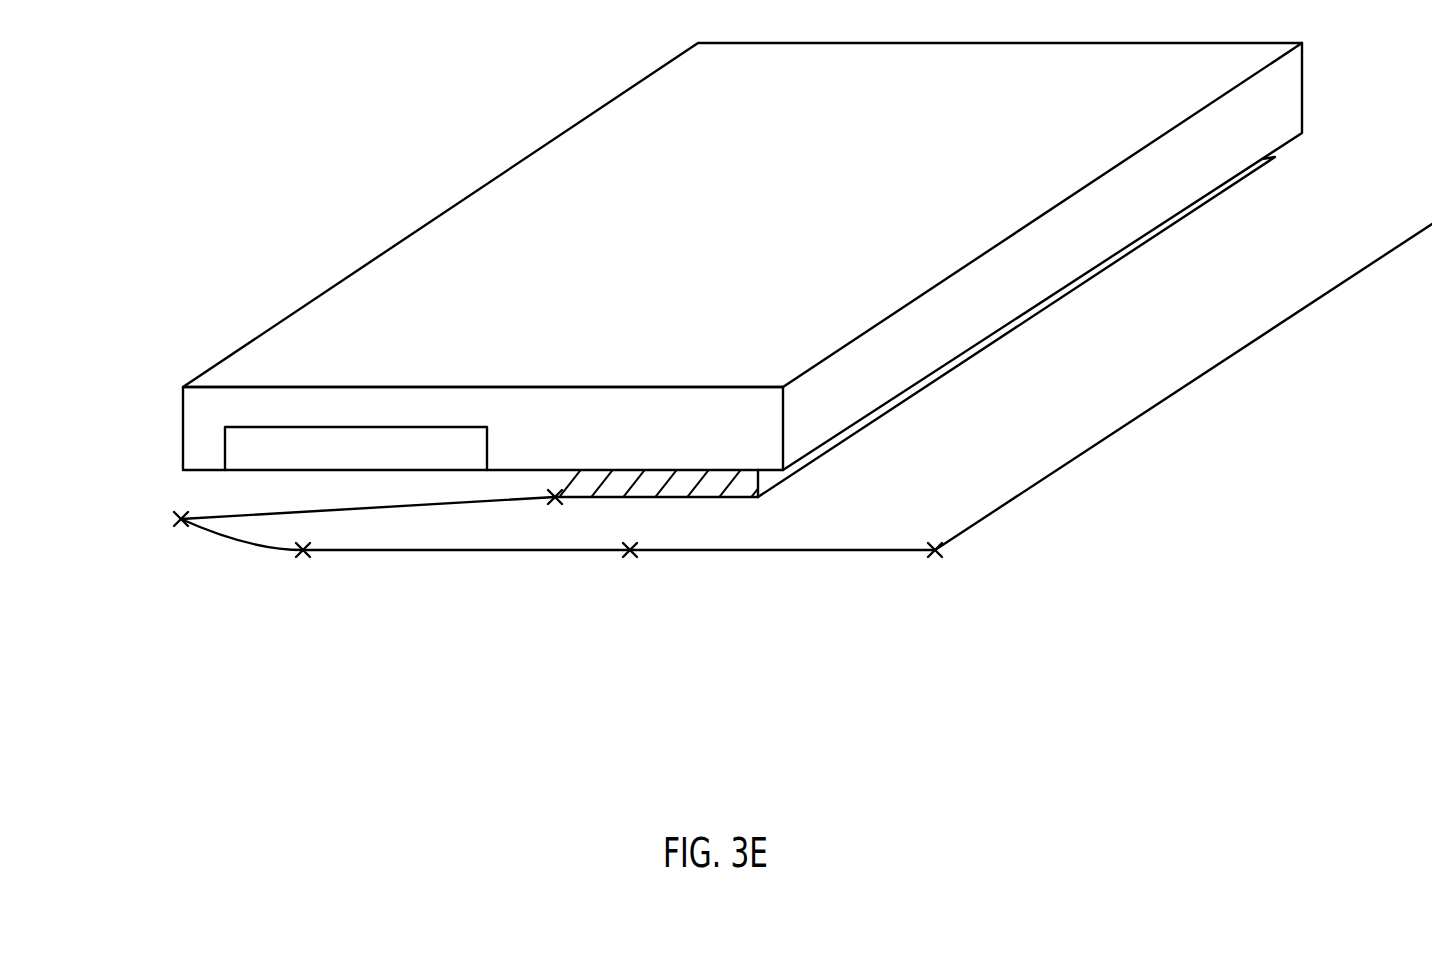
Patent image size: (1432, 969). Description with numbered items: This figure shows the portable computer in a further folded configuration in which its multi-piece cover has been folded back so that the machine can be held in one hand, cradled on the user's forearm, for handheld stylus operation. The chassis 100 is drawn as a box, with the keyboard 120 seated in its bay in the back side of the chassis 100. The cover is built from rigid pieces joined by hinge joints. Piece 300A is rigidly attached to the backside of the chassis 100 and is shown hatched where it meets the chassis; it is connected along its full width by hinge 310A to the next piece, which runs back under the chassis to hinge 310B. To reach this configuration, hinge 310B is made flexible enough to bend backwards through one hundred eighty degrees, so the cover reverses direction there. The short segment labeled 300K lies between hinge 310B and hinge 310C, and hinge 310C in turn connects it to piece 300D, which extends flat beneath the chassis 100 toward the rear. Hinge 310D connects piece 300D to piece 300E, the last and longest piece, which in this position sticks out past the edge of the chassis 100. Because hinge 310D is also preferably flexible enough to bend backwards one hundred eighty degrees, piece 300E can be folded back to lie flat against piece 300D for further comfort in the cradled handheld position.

The chassis 100 is at (307, 366).
The keyboard 120 is at (260, 448).
The piece 300A of cover 300A is at (688, 458).
The hinge 310A is at (555, 497).
The hinge 310B is at (170, 529).
The flexible circuit portion K 300K is at (210, 556).
The hinge 310C is at (298, 565).
The piece 300D of cover 300D is at (450, 565).
The hinge 310D is at (626, 570).
The piece 300E of cover 300E is at (856, 565).